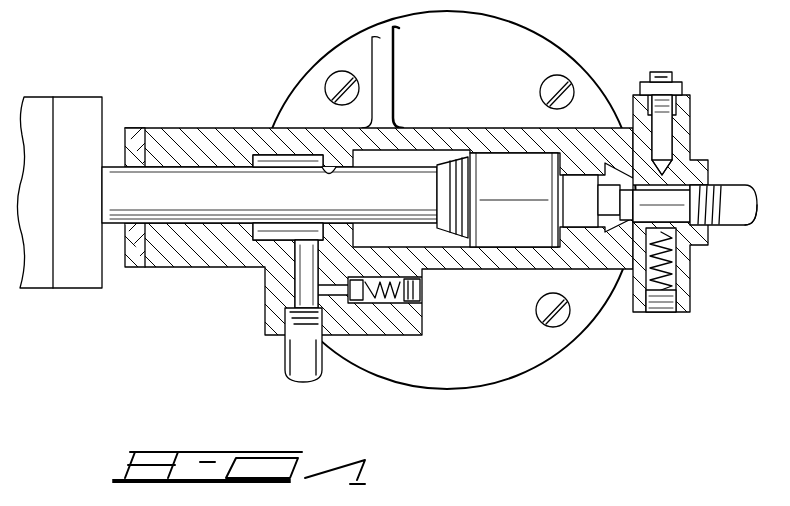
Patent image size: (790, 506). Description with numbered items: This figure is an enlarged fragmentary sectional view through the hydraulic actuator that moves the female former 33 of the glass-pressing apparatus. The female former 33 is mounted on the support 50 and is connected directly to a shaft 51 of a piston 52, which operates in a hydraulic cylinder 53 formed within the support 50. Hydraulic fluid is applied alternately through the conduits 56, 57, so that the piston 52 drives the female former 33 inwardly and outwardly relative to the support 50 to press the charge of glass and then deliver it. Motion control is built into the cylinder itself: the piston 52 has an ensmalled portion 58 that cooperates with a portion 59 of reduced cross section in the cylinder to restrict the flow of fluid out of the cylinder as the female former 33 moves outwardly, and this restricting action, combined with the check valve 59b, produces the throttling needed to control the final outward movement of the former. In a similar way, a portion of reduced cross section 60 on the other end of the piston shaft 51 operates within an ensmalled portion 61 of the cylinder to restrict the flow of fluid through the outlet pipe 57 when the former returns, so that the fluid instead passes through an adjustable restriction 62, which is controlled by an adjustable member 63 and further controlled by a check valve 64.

The female former 33 is at (42, 108).
The support 50 is at (515, 357).
The shaft 51 is at (150, 185).
The piston 52 is at (500, 175).
The hydraulic cylinder 53 is at (440, 97).
The conduit 56 is at (297, 352).
The conduit 57 is at (742, 216).
The ensmalled portion 58 is at (462, 242).
The portion of reduced cross section 59 is at (330, 174).
The check valve 59b is at (348, 300).
The portion of reduced cross section 60 is at (608, 195).
The ensmalled portion 61 is at (703, 188).
The adjustable restriction 62 is at (668, 170).
The adjustable member 63 is at (668, 134).
The check valve 64 is at (664, 238).